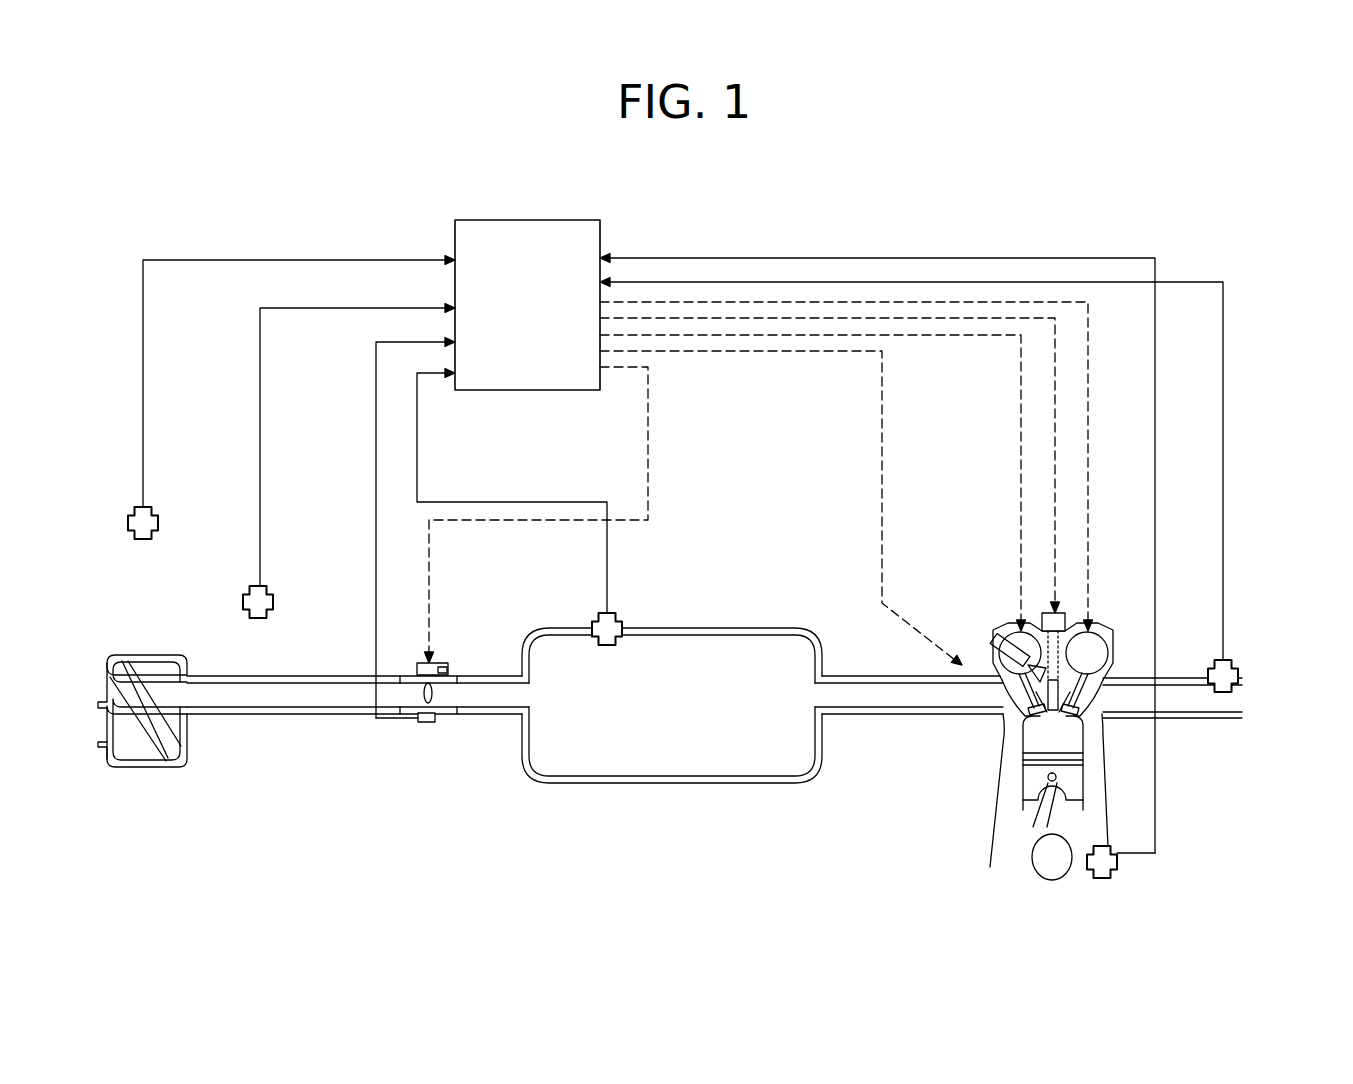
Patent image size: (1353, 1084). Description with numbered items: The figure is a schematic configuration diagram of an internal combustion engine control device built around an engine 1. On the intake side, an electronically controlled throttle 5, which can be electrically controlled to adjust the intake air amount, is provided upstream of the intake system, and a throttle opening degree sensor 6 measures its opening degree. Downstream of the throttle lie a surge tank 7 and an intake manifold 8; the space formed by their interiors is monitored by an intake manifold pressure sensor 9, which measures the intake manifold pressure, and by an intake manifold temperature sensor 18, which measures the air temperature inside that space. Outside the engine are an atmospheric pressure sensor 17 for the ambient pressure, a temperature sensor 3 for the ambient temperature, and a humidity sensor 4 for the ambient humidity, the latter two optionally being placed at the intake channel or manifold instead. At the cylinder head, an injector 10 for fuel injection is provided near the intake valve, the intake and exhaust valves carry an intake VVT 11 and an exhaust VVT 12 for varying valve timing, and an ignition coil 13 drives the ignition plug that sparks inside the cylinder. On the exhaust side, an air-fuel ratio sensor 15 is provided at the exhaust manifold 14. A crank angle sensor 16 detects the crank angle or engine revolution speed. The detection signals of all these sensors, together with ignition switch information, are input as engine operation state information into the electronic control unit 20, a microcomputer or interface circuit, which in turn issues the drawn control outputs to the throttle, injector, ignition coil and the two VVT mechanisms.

The engine 1 is at (1069, 682).
The temperature sensor 3 is at (296, 535).
The humidity sensor 4 is at (267, 588).
The electronically controlled throttle 5 is at (437, 665).
The throttle opening degree sensor 6 is at (433, 720).
The surge tank 7 is at (660, 763).
The intake manifold 8 is at (897, 695).
The intake manifold pressure sensor 9 is at (663, 572).
The injector 10 is at (980, 678).
The intake VVT 11 is at (1003, 628).
The exhaust VVT 12 is at (1095, 652).
The ignition coil 13 is at (1053, 622).
The exhaust manifold 14 is at (1127, 695).
The air-fuel ratio sensor 15 is at (1240, 667).
The crank angle sensor 16 is at (1117, 875).
The atmospheric pressure sensor 17 is at (158, 513).
The intake manifold temperature sensor 18 is at (625, 620).
The electronic control unit (ECU) 20 is at (488, 368).